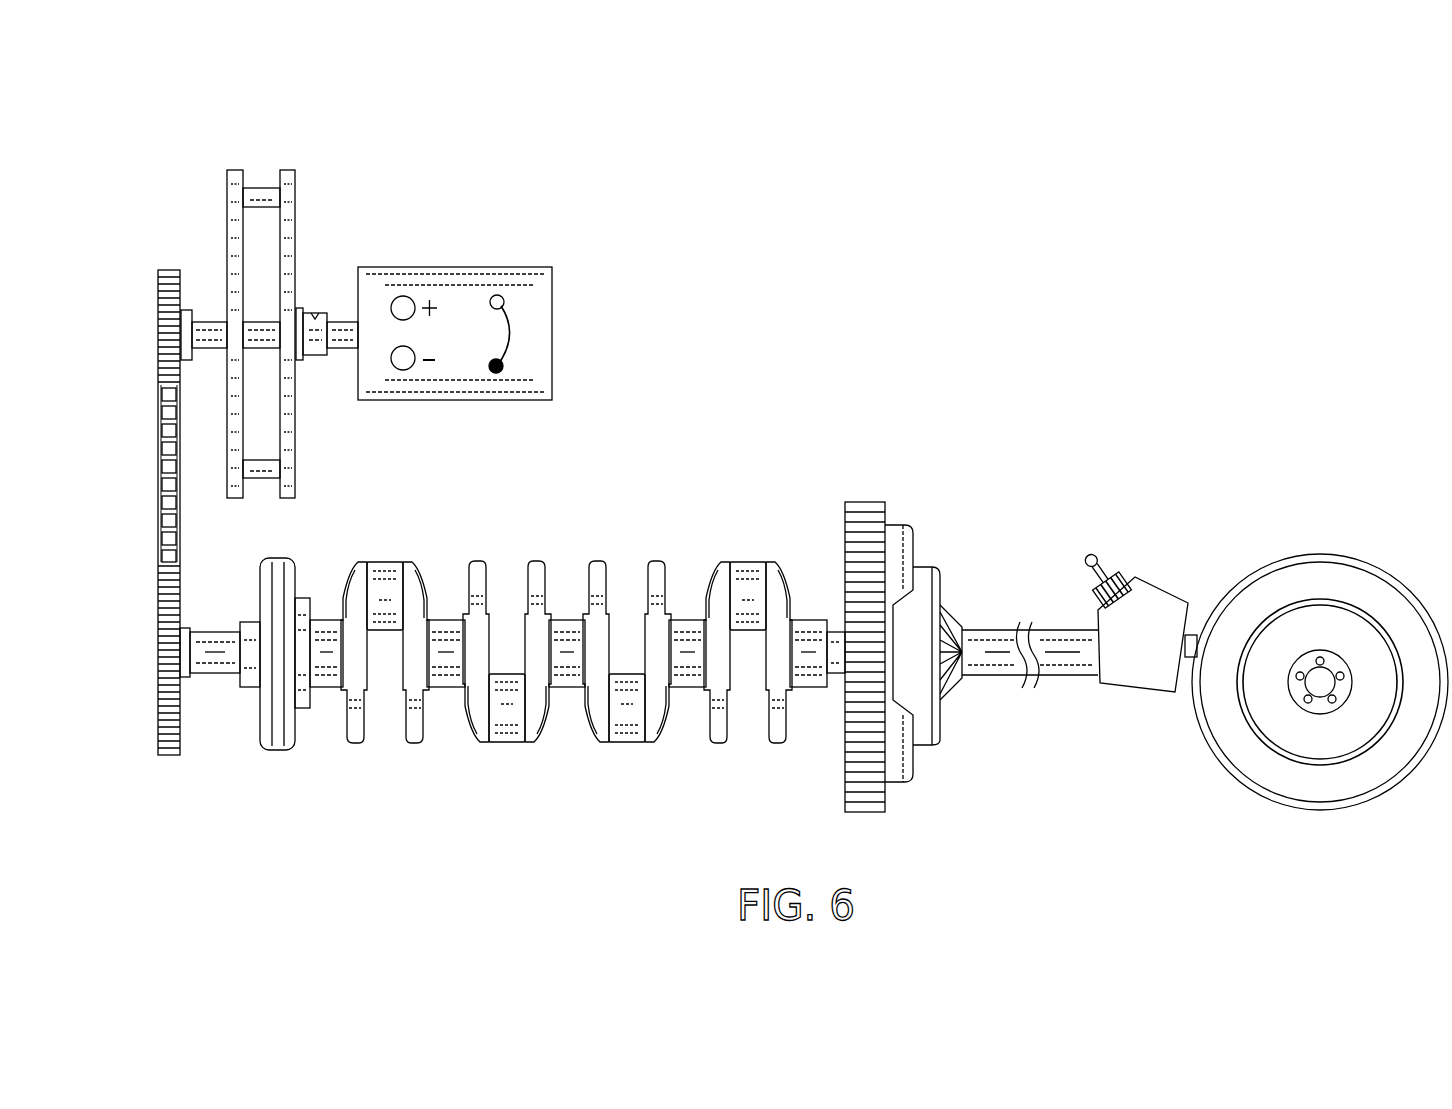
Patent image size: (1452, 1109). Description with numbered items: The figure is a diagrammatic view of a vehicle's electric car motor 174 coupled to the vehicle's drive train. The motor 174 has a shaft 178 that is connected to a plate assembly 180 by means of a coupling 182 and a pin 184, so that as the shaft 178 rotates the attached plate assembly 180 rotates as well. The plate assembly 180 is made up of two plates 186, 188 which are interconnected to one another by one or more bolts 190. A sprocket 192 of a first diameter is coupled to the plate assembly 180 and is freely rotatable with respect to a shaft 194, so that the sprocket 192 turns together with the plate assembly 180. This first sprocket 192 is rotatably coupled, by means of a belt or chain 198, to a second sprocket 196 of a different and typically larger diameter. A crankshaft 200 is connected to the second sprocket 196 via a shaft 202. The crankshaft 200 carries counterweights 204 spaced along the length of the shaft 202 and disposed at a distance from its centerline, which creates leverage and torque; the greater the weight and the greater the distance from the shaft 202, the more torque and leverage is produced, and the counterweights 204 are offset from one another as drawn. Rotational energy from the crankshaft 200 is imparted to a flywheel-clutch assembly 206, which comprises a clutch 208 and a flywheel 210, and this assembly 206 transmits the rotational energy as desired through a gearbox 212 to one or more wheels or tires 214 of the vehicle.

The electric car motor 174 is at (456, 267).
The shaft 178 is at (342, 350).
The plate assembly 180 is at (231, 288).
The coupling 182 is at (315, 347).
The pin 184 is at (316, 308).
The plate 186 is at (287, 170).
The plate 188 is at (233, 170).
The bolt 190 is at (262, 188).
The sprocket 192 is at (157, 285).
The shaft 194 is at (212, 322).
The second sprocket 196 is at (157, 732).
The chain 198 is at (157, 462).
The crankshaft 200 is at (512, 680).
The shaft 202 is at (215, 680).
The counterweight 204 is at (387, 572).
The flywheel-clutch assembly 206 is at (936, 646).
The clutch 208 is at (866, 798).
The flywheel 210 is at (918, 705).
The gearbox 212 is at (1152, 583).
The wheel 214 is at (1355, 605).